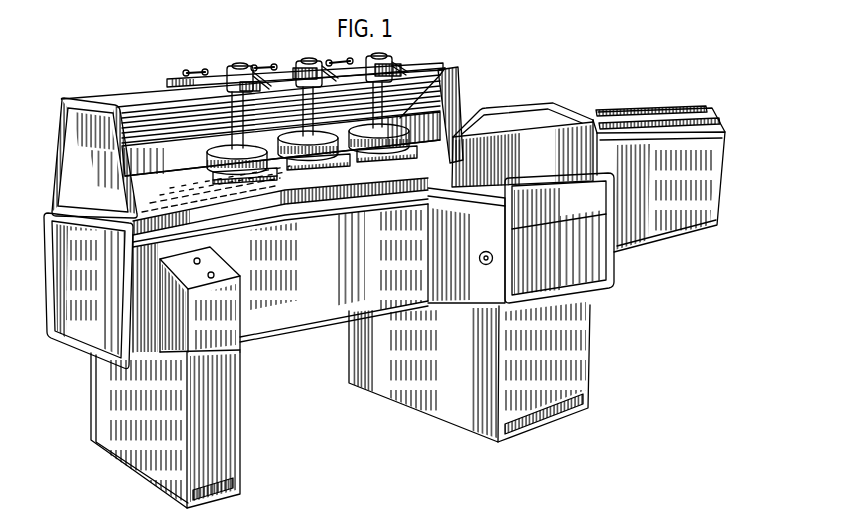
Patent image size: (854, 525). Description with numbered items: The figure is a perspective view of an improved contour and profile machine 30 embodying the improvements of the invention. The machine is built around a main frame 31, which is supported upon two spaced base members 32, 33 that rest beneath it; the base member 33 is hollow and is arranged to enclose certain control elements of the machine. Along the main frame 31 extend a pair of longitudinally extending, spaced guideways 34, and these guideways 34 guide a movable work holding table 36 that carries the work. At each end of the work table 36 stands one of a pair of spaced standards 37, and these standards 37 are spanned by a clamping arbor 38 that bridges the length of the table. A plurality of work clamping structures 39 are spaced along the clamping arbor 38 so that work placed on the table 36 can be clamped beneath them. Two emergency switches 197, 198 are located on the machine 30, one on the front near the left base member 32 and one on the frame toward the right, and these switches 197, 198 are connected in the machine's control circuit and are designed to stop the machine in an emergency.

The contour and profile machine 30 is at (634, 75).
The main frame 31 is at (297, 317).
The base member 32 is at (233, 437).
The base member 33 is at (590, 356).
The guideways 34 is at (652, 116).
The work holding table 36 is at (220, 200).
The standards 37 is at (70, 157).
The clamping arbor 38 is at (131, 97).
The work clamping structures 39 is at (203, 157).
The emergency switch 197 is at (214, 278).
The emergency switch 198 is at (481, 263).